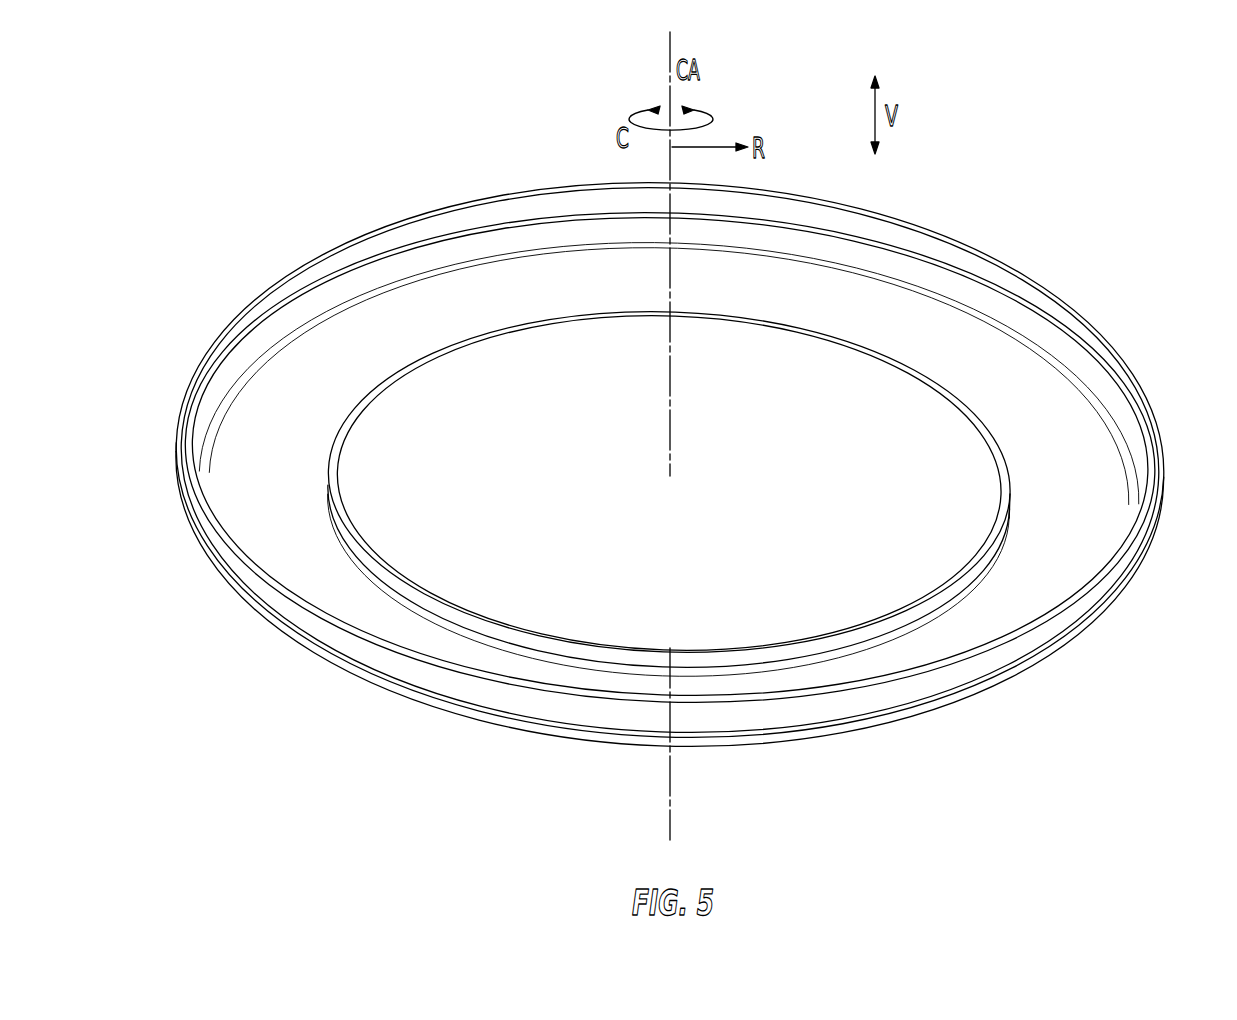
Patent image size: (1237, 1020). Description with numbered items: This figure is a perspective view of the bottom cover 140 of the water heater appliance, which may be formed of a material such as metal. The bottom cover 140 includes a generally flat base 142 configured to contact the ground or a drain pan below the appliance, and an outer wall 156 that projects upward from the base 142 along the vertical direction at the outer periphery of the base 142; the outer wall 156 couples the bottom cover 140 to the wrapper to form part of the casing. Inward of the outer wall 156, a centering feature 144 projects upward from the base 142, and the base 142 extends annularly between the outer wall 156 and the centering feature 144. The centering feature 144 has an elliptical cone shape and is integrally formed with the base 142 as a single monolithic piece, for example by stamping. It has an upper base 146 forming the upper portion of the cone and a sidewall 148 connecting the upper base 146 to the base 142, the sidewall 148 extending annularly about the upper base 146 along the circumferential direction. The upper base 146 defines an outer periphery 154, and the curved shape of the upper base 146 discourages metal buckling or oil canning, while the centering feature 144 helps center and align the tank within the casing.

The bottom cover 140 is at (345, 181).
The base 142 is at (964, 327).
The centering feature 144 is at (557, 360).
The upper base 146 is at (806, 459).
The sidewall 148 is at (998, 511).
The outer periphery 154 is at (977, 417).
The outer wall 156 is at (1008, 657).